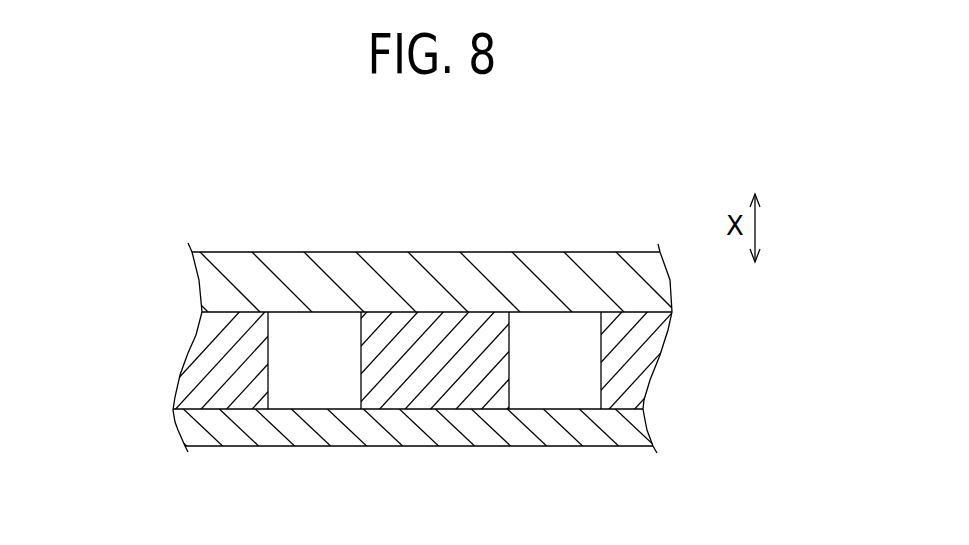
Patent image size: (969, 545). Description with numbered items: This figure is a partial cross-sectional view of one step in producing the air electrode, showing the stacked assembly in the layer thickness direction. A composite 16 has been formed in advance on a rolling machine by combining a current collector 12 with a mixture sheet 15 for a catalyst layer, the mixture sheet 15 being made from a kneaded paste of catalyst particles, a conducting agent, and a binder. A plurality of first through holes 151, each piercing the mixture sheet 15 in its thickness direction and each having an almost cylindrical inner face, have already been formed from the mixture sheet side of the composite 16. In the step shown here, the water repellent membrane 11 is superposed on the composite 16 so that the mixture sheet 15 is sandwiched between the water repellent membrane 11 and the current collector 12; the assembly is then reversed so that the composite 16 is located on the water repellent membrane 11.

The water repellent membrane 11 is at (212, 290).
The current collector 12 is at (200, 428).
The mixture sheet for a catalyst layer 15 is at (205, 362).
The composite 16 is at (118, 339).
The first through holes 151 is at (318, 400).